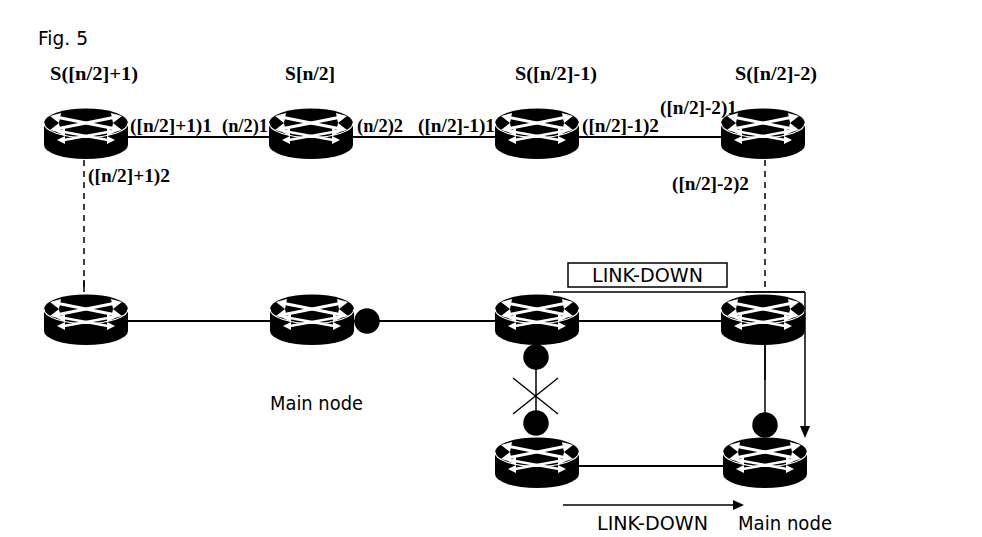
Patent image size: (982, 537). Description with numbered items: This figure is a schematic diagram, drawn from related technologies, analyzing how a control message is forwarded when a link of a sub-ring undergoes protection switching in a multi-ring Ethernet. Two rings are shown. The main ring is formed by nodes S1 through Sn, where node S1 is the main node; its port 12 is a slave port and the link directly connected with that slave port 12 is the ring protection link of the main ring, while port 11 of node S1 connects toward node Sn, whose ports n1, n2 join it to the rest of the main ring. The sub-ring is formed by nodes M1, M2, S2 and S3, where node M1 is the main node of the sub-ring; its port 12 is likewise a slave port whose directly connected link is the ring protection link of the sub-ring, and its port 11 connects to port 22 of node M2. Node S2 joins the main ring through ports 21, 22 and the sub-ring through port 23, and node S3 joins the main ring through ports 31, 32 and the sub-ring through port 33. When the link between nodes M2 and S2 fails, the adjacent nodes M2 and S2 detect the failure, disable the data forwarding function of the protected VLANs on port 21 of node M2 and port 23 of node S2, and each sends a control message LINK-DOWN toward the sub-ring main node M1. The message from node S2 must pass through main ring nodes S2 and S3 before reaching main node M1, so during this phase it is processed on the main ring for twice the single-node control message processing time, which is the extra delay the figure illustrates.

The port 11 is at (478, 382).
The slave port 12 is at (566, 365).
The port 21 is at (516, 366).
The port 22 is at (597, 382).
The port 23 is at (547, 357).
The port 31 is at (705, 309).
The port 32 is at (770, 281).
The port 33 is at (750, 362).
The port n1 is at (98, 281).
The port n2 is at (144, 309).
The main node S1 is at (312, 344).
The node S2 is at (536, 345).
The node S3 is at (763, 344).
The node Sn is at (86, 344).
The main node of the sub-ring M1 is at (765, 479).
The node M2 is at (537, 479).